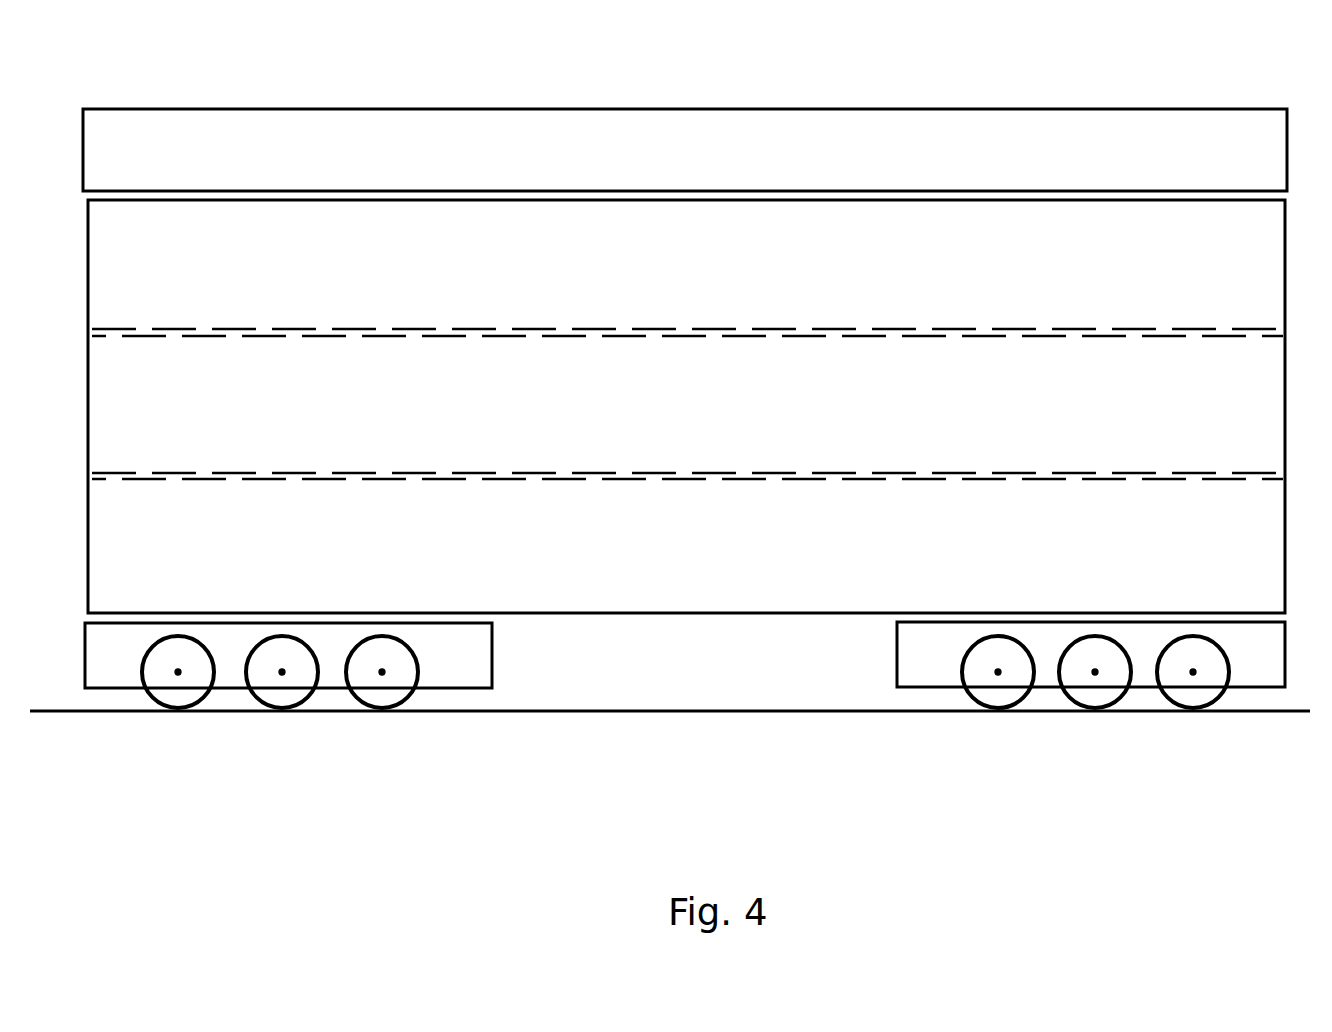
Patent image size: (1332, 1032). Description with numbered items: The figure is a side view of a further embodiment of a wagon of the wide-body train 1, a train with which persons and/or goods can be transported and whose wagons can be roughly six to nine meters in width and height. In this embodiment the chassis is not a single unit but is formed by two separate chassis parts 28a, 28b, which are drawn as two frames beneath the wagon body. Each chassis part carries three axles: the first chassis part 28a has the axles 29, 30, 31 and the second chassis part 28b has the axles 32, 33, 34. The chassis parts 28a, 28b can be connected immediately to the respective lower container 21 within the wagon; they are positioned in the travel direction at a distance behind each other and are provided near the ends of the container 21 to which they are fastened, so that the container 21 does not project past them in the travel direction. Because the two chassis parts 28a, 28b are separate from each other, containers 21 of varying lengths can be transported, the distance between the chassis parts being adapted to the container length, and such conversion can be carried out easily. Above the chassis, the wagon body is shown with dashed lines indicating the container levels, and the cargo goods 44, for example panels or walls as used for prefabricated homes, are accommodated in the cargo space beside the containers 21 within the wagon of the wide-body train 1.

The wide-body train 1 is at (939, 92).
The container 21 is at (1250, 512).
The cargo goods 44 is at (1243, 553).
The chassis part 28a is at (464, 698).
The chassis part 28b is at (932, 697).
The axle 29 is at (178, 675).
The axle 30 is at (282, 675).
The axle 31 is at (382, 675).
The axle 32 is at (1000, 674).
The axle 33 is at (1097, 674).
The axle 34 is at (1194, 674).